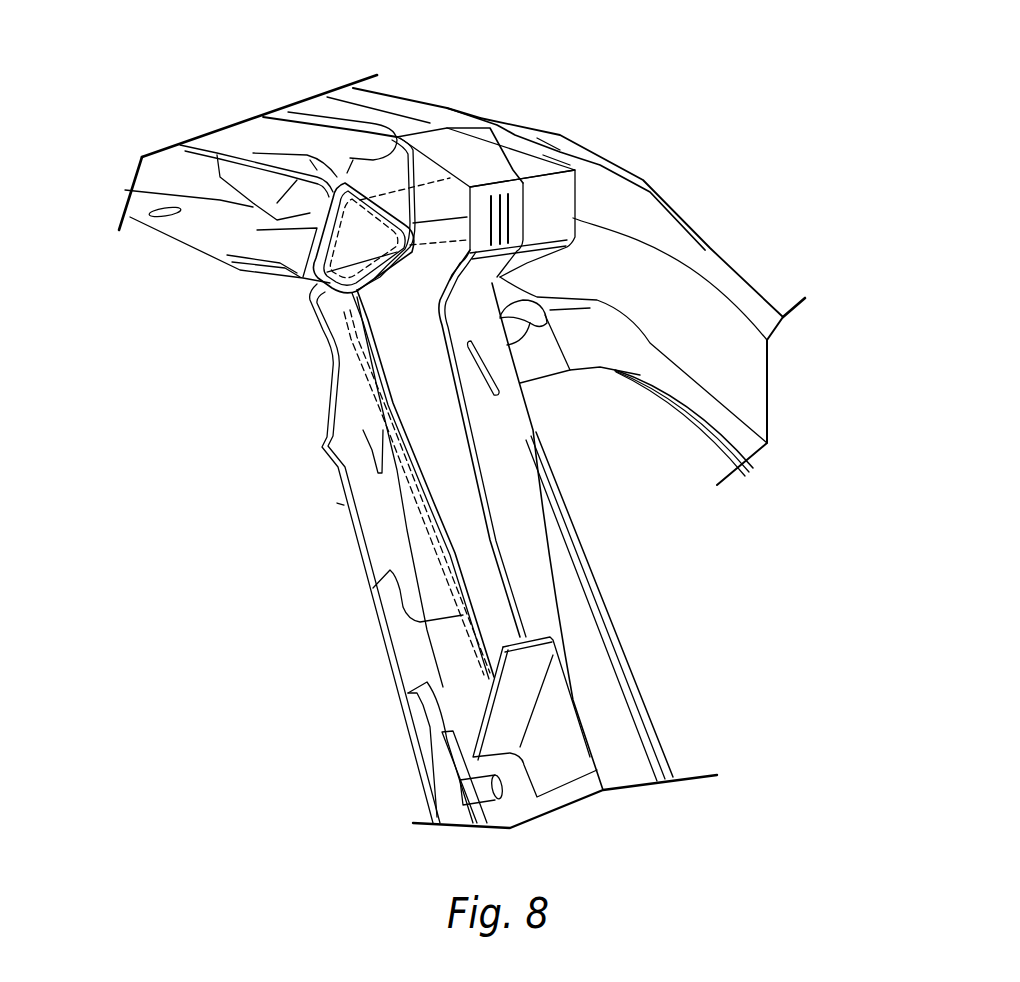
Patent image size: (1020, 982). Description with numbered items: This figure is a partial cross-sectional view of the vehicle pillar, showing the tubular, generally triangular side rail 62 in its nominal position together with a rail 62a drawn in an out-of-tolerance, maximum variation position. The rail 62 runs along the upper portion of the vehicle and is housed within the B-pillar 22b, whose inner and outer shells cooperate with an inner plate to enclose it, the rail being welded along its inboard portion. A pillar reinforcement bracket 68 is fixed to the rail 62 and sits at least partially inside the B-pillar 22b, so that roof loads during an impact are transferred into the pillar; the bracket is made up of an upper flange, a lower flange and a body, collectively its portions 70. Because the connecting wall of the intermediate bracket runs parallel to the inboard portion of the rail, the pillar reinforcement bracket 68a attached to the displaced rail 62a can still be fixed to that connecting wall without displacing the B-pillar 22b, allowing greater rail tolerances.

The B-pillar 22b is at (618, 596).
The side rail 62 is at (617, 188).
The rail 62a is at (665, 270).
The pillar reinforcement bracket 68 is at (465, 481).
The pillar reinforcement bracket 68a is at (400, 505).
The portion of the pillar reinforcement bracket 70 is at (492, 733).